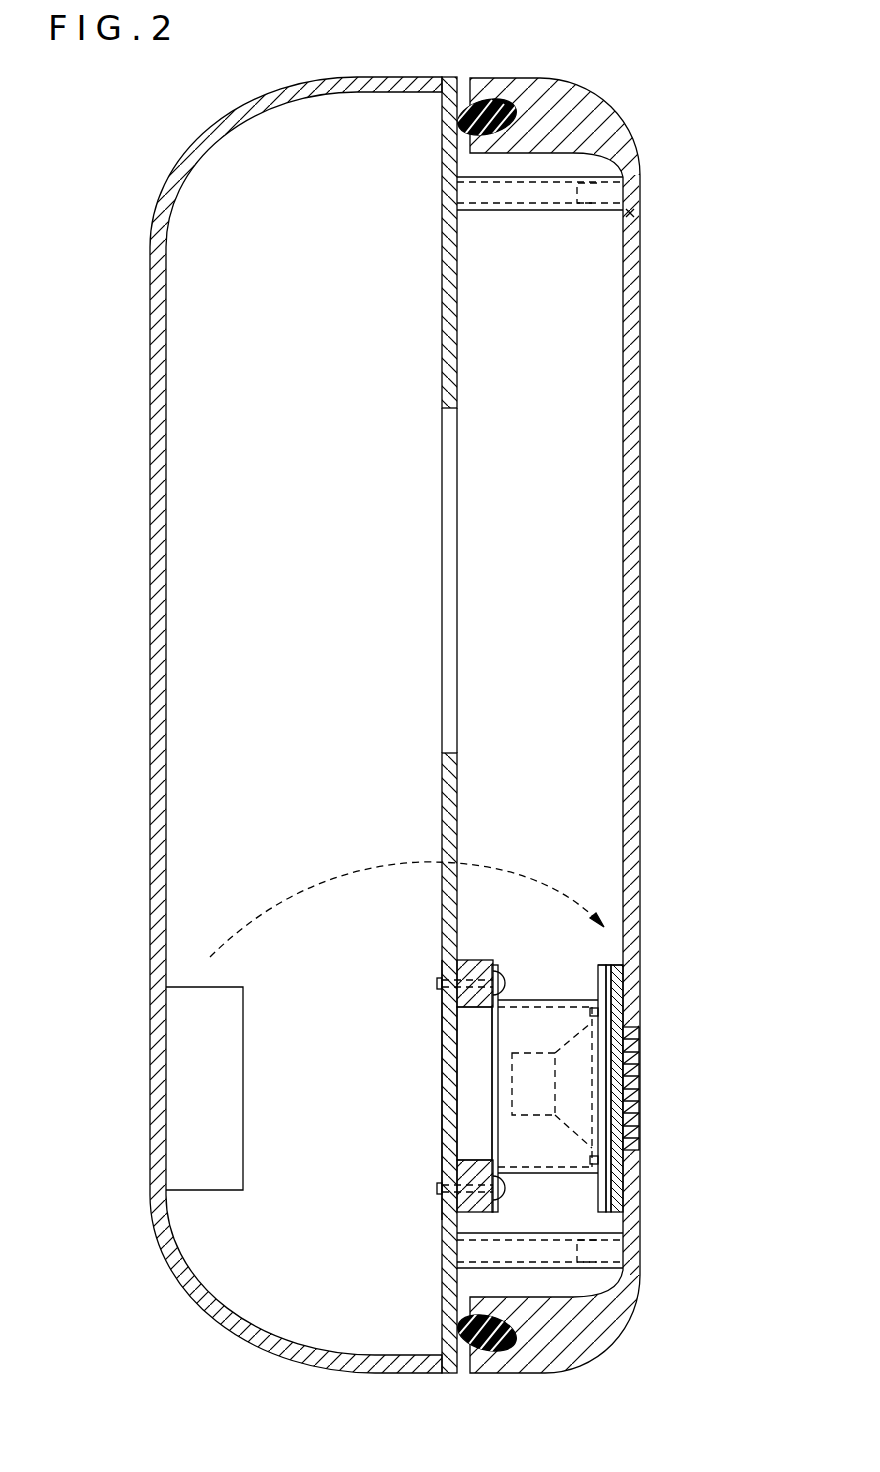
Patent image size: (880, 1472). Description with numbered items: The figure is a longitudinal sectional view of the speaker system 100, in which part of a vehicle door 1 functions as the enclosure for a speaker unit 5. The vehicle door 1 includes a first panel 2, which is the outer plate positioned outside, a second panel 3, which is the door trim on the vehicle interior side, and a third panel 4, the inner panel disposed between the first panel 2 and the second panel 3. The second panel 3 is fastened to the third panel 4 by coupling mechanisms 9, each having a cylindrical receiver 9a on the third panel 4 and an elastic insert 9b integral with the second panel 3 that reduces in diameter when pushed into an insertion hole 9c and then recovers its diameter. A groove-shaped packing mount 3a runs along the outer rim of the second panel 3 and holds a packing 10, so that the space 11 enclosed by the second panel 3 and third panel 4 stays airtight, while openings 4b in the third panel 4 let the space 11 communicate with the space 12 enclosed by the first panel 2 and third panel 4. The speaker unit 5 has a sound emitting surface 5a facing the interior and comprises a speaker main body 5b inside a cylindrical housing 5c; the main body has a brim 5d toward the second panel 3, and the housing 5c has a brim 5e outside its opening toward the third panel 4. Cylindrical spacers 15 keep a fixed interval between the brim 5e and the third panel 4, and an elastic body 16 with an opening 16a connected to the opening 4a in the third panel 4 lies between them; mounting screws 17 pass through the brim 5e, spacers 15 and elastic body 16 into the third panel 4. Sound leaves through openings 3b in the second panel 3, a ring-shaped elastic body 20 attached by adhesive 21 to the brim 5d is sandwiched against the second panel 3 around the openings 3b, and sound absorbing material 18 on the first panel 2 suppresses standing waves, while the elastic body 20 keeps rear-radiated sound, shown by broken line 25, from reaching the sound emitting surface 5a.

The vehicle door 1 is at (166, 175).
The speaker system 100 is at (716, 157).
The first panel 2 is at (150, 508).
The second panel 3 is at (594, 725).
The packing mount 3a is at (522, 112).
The openings 3b is at (635, 1087).
The third panel 4 is at (400, 725).
The opening 4a is at (445, 1080).
The openings 4b is at (447, 545).
The speaker unit 5 is at (598, 1070).
The sound emitting surface 5a is at (612, 1062).
The speaker main body 5b is at (537, 1055).
The housing 5c is at (563, 1170).
The brim 5d is at (597, 972).
The brim 5e is at (500, 968).
The coupling mechanisms 9 is at (546, 749).
The receiver 9a is at (500, 211).
The insert 9b is at (588, 213).
The insertion hole 9c is at (635, 222).
The packing 10 is at (462, 128).
The space 11 is at (548, 467).
The space 12 is at (298, 451).
The spacers 15 is at (465, 960).
The elastic body 16 is at (434, 1066).
The opening 16a is at (468, 1125).
The mounting screws 17 is at (437, 983).
The sound absorbing material 18 is at (247, 1002).
The elastic body 20 is at (617, 1182).
The adhesive 21 is at (605, 966).
The broken line 25 is at (367, 865).